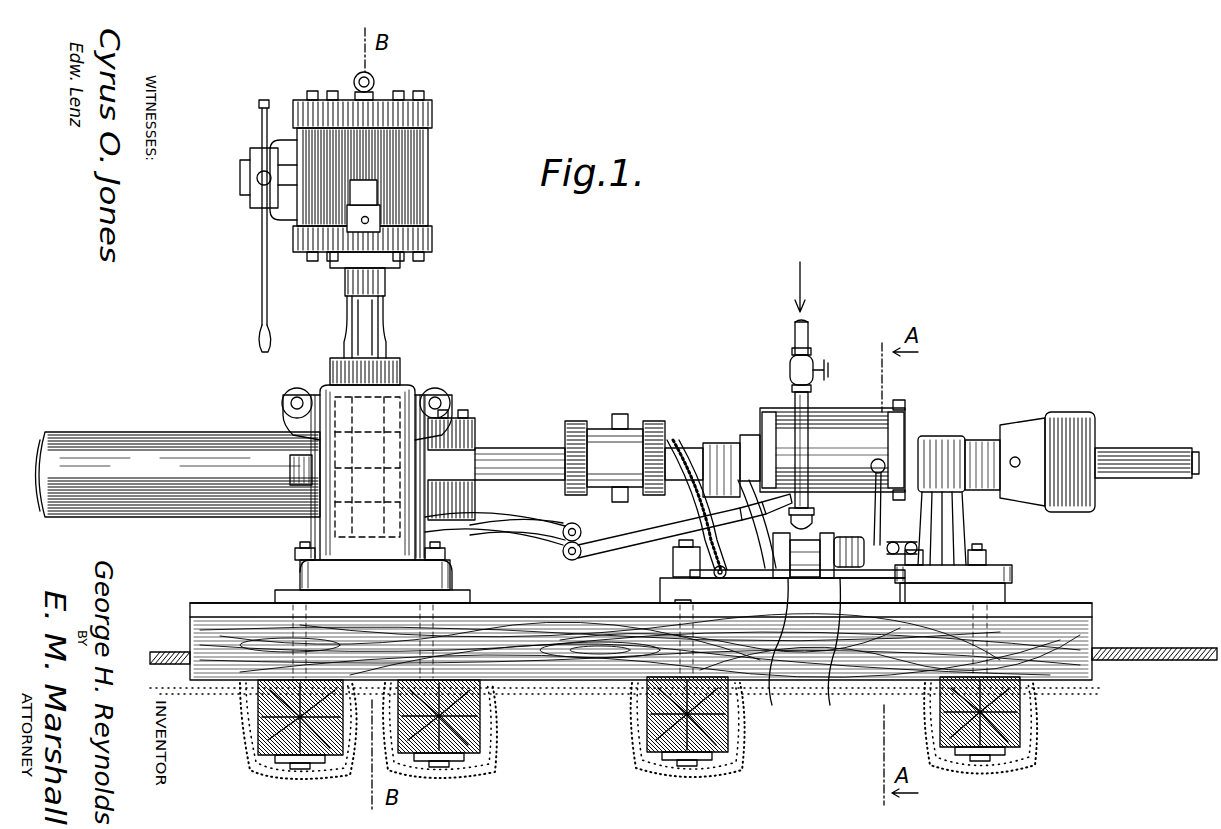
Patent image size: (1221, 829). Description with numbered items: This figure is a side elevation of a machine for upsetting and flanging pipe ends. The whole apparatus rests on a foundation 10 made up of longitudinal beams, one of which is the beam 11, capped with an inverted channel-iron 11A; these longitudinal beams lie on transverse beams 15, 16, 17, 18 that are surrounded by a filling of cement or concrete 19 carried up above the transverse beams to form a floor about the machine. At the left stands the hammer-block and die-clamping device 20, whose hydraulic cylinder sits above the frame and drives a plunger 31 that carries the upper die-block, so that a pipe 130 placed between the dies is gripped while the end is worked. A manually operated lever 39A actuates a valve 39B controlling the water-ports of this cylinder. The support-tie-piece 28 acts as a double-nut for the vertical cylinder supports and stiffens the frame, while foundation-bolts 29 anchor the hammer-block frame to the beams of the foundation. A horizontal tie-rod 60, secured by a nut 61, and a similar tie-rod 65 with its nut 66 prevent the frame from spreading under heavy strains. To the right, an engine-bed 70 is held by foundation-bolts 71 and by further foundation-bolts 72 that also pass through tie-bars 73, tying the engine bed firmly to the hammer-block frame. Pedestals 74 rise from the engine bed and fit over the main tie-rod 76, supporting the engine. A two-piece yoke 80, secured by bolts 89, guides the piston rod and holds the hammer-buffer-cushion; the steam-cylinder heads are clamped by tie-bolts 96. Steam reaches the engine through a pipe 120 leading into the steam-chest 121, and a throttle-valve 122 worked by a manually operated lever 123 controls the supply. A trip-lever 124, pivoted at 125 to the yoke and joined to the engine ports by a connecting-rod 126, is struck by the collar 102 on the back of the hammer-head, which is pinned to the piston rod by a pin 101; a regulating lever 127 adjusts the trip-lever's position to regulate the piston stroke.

The foundation 10 is at (1050, 592).
The longitudinal beam 11 is at (1093, 633).
The inverted channel-iron cap 11A is at (1090, 609).
The transverse beam 15 is at (258, 730).
The transverse beam 16 is at (482, 733).
The transverse beam 17 is at (730, 705).
The transverse beam 18 is at (1022, 720).
The cement or concrete filling 19 is at (1125, 652).
The hammer-block and die-clamping device 20 is at (373, 316).
The support-tie-piece 28 is at (298, 588).
The foundation-bolts 29 is at (296, 559).
The plunger 31 is at (358, 331).
The manually operated lever 39A is at (258, 262).
The valve 39B is at (254, 163).
The horizontal tie-rod 60 is at (447, 397).
The nut 61 is at (458, 410).
The tie-rod 65 is at (294, 394).
The nut 66 is at (284, 406).
The engine-bed 70 is at (1005, 594).
The foundation-bolts 71 is at (988, 566).
The foundation-bolts 72 is at (668, 555).
The tie-bars 73 is at (515, 605).
The pedestal 74 is at (948, 531).
The main tie-rod 76 is at (542, 436).
The yoke 80 is at (598, 428).
The bolts 89 is at (625, 437).
The tie-bolts 96 is at (838, 417).
The pin 101 is at (495, 528).
The collar 102 is at (523, 460).
The pipe 120 is at (809, 341).
The steam-chest 121 is at (794, 626).
The throttle-valve 122 is at (839, 626).
The manually operated lever 123 is at (885, 462).
The trip-lever 124 is at (523, 505).
The pivot 125 is at (566, 538).
The connecting-rod 126 is at (640, 550).
The regulating lever 127 is at (655, 538).
The pipe 130 is at (180, 438).